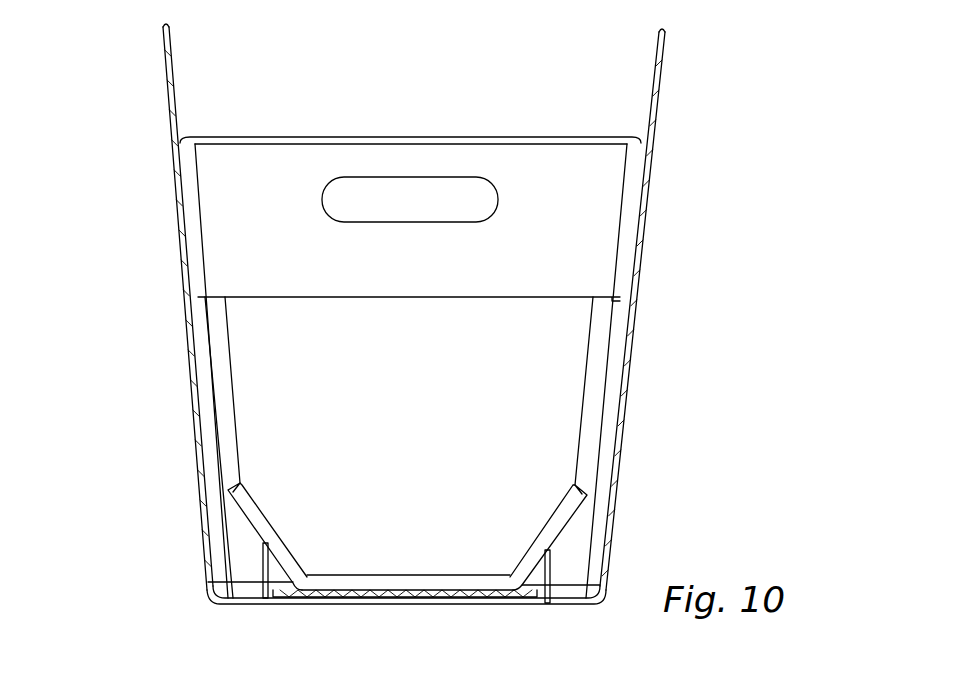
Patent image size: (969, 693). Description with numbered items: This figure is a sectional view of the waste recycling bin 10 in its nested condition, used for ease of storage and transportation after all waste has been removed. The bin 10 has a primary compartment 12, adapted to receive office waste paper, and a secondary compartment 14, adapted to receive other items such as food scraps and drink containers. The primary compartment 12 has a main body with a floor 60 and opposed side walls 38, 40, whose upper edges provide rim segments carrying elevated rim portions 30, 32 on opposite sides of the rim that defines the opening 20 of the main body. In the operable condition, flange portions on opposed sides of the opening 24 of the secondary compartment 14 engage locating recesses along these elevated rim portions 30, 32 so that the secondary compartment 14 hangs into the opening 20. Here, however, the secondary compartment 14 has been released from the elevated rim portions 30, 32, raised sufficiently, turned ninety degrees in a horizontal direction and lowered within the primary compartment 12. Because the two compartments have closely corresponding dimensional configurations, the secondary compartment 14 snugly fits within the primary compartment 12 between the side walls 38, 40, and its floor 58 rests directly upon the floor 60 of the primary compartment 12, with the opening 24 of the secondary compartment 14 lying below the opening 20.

The waste recycling bin 10 is at (693, 490).
The primary compartment 12 is at (298, 137).
The secondary compartment 14 is at (302, 297).
The opening 20 is at (535, 150).
The opening 24 is at (514, 310).
The elevated rim portion 30 is at (665, 30).
The elevated rim portion 32 is at (163, 27).
The side wall 38 is at (645, 197).
The side wall 40 is at (182, 268).
The floor 58 is at (337, 587).
The floor 60 is at (455, 588).